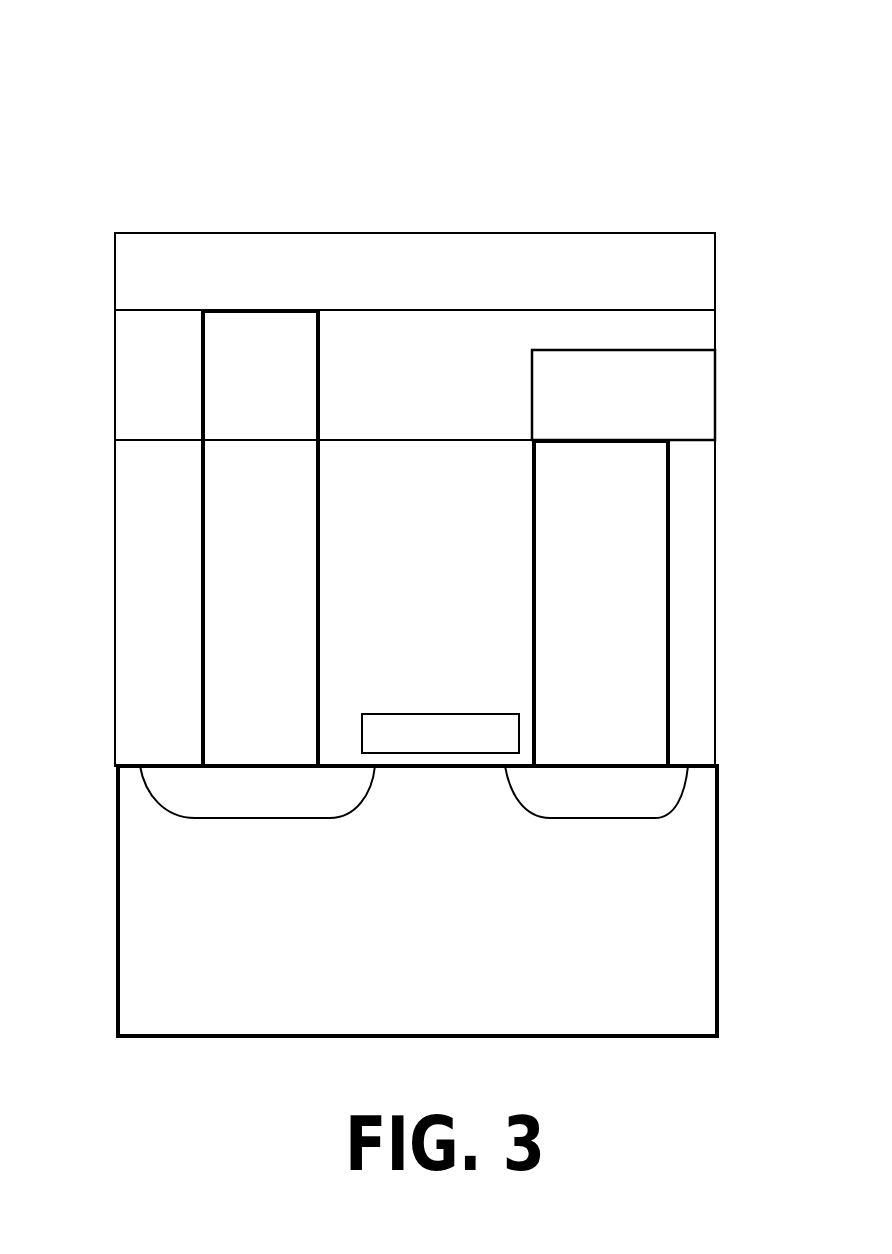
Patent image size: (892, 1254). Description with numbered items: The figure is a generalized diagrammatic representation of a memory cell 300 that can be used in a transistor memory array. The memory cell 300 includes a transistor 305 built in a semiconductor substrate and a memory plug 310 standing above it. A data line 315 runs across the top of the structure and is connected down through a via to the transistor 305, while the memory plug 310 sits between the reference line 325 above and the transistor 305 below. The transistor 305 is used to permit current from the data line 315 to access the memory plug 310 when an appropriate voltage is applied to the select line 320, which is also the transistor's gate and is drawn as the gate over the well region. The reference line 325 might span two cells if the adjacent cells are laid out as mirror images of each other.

The memory cell 300 is at (142, 130).
The transistor 305 is at (522, 861).
The memory plug 310 is at (532, 605).
The data line 315 is at (376, 232).
The select line 320 is at (403, 716).
The reference line 325 is at (532, 390).